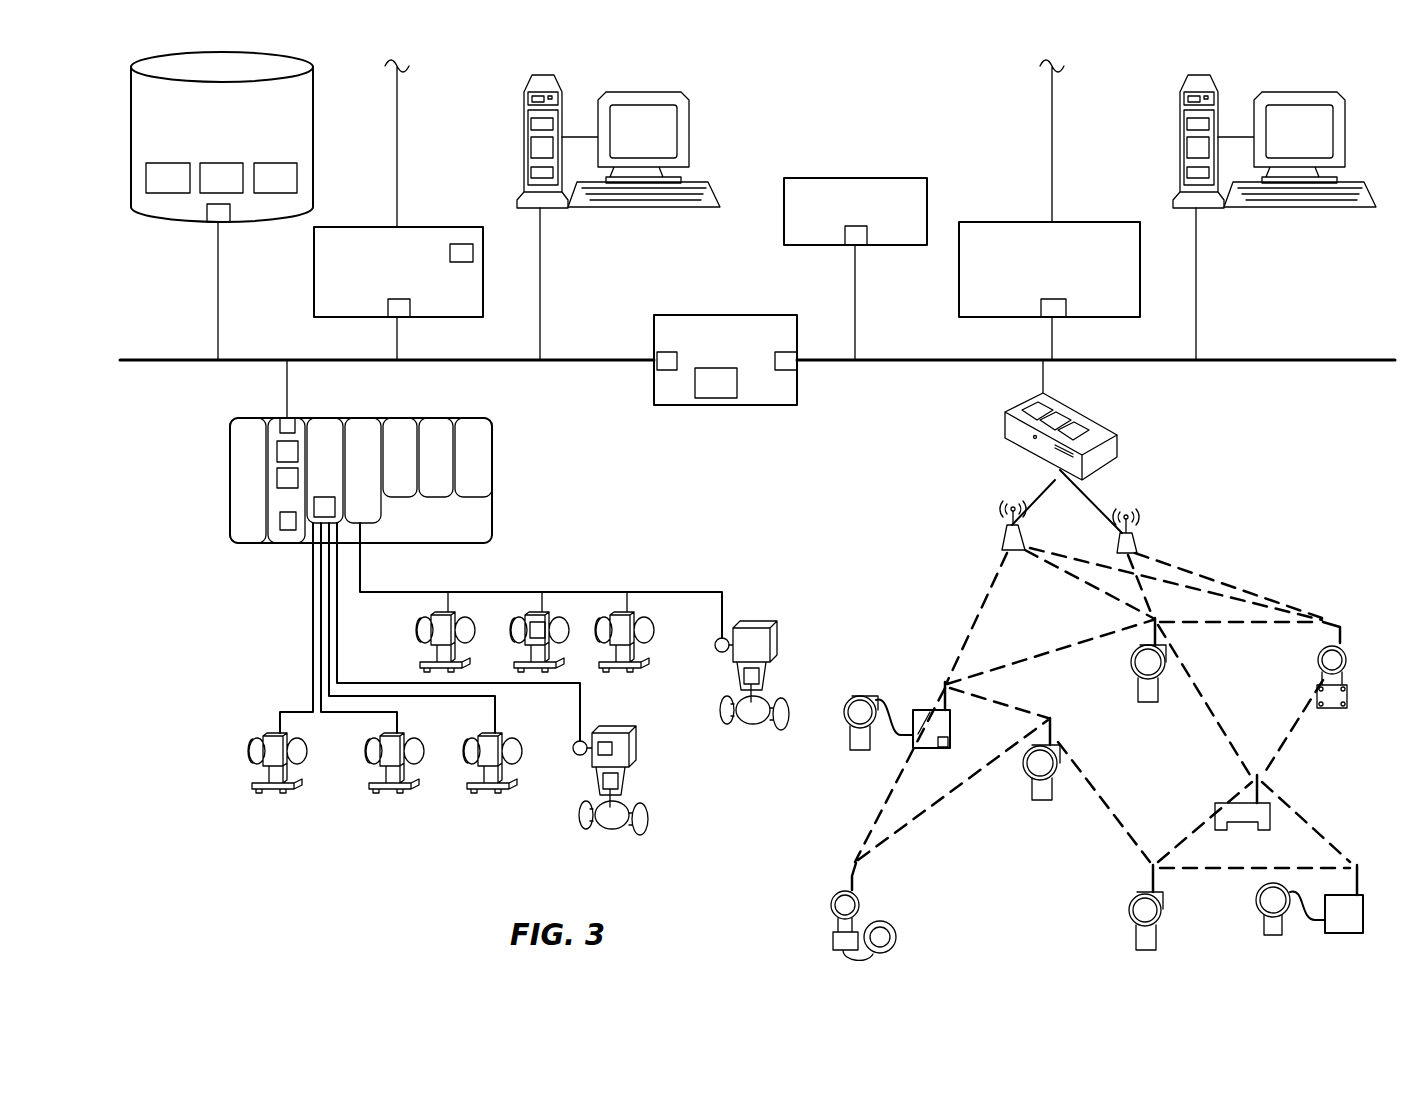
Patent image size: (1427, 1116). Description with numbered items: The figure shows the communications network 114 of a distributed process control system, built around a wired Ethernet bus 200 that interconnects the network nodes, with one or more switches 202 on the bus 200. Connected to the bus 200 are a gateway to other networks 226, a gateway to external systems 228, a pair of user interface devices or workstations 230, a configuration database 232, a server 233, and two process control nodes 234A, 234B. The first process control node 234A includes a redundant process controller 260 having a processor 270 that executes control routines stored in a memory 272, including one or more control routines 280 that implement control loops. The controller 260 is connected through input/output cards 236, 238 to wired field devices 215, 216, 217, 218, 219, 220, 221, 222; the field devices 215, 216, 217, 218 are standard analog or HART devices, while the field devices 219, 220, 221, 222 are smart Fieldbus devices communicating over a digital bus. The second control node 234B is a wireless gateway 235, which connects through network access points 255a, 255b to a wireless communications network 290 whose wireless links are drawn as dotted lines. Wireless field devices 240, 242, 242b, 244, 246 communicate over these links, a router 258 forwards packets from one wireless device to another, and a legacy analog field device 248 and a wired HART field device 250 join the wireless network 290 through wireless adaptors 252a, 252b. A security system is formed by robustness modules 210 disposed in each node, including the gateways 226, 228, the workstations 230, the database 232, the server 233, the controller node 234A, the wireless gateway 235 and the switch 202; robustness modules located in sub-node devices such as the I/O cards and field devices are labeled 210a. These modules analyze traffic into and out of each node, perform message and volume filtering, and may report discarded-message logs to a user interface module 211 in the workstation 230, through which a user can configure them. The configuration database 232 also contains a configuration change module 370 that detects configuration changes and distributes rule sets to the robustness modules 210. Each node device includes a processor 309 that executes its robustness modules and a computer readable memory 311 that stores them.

The communications network 114 is at (855, 105).
The wired Ethernet bus 200 is at (600, 365).
The switch 202 is at (735, 315).
The robustness module 210 is at (222, 213).
The robustness module in sub-node device 210a is at (335, 506).
The user interface module 211 is at (530, 127).
The wired field device 215 is at (275, 772).
The wired field device 216 is at (392, 772).
The wired field device 217 is at (490, 772).
The wired field device 218 is at (592, 773).
The smart field device 219 is at (451, 614).
The smart field device 220 is at (549, 618).
The smart field device 221 is at (636, 618).
The smart field device 222 is at (753, 623).
The gateway to other networks 226 is at (423, 227).
The gateway to external systems 228 is at (1012, 221).
The user interface device or workstation 230 is at (690, 125).
The configuration database 232 is at (300, 64).
The server 233 is at (882, 178).
The first process control node 234A is at (240, 551).
The second process control node 234B is at (1045, 446).
The wireless gateway 235 is at (1118, 449).
The I/O card 236 is at (325, 440).
The I/O card 238 is at (362, 435).
The wireless field device 240 is at (898, 940).
The wireless field device 242 is at (1027, 775).
The wireless field device 242b is at (1132, 675).
The wireless field device 244 is at (1128, 913).
The wireless field device 246 is at (1350, 705).
The field device 248 is at (850, 736).
The field device 250 is at (1255, 902).
The wireless adaptor 252a is at (952, 733).
The wireless adaptor 252b is at (1365, 915).
The network access point 255a is at (1005, 530).
The network access point 255b is at (1135, 532).
The router 258 is at (1250, 828).
The process controller 260 is at (273, 437).
The processor 270 is at (277, 451).
The memory 272 is at (277, 477).
The control routine 280 is at (288, 531).
The wireless communications network 290 is at (1314, 605).
The processor 309 is at (162, 195).
The computer readable memory 311 is at (206, 195).
The configuration change module 370 is at (273, 195).